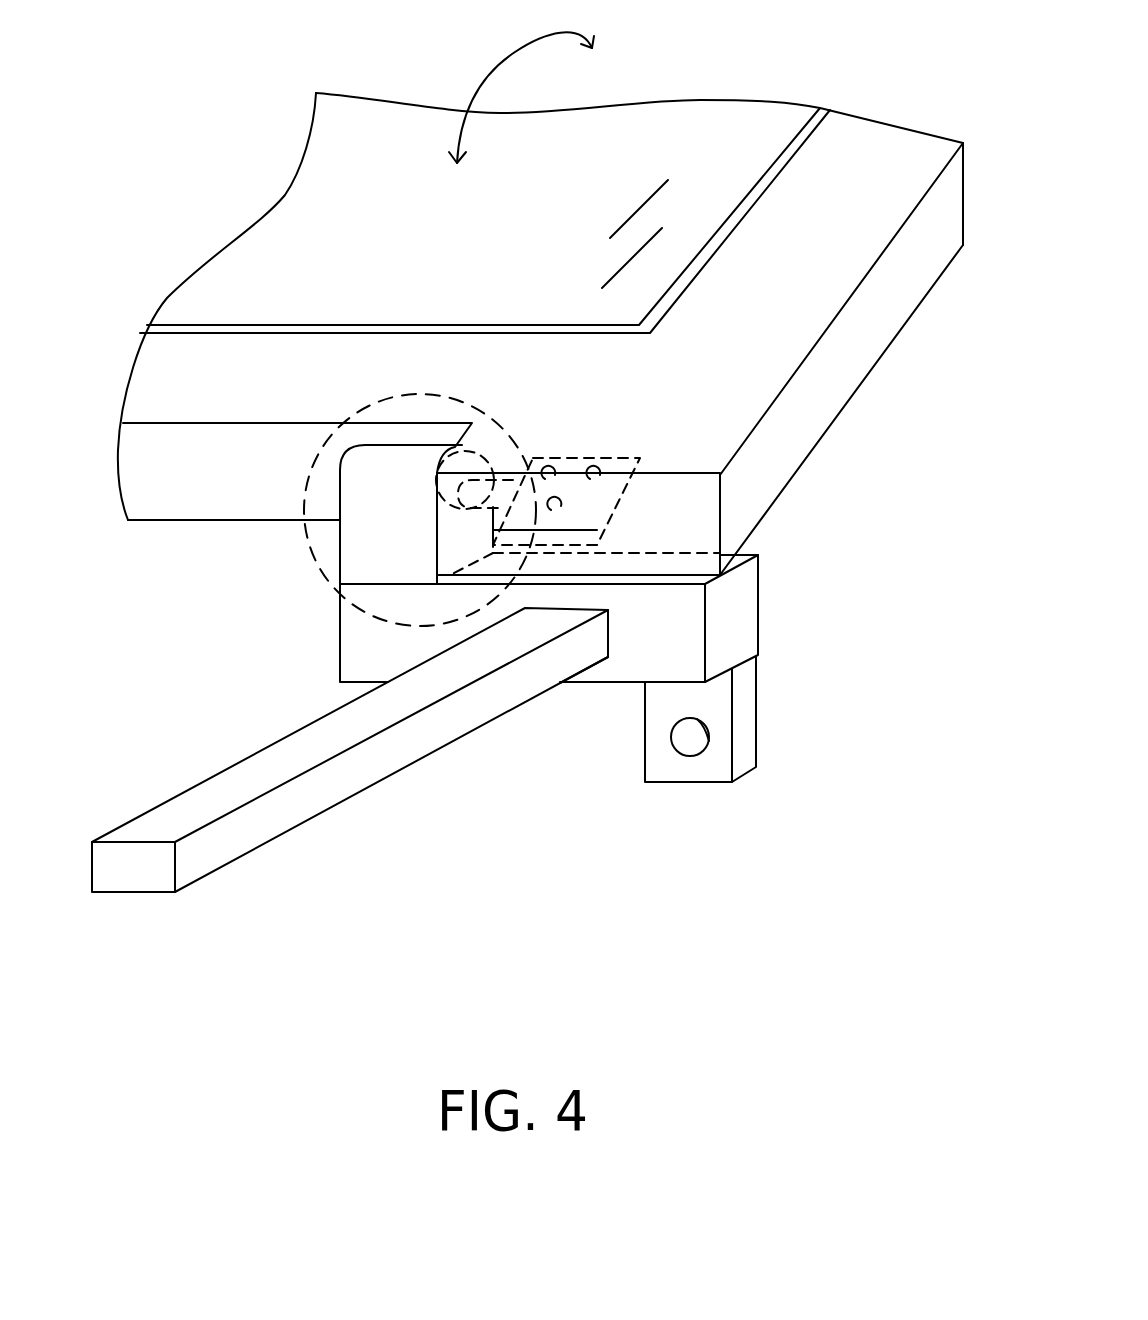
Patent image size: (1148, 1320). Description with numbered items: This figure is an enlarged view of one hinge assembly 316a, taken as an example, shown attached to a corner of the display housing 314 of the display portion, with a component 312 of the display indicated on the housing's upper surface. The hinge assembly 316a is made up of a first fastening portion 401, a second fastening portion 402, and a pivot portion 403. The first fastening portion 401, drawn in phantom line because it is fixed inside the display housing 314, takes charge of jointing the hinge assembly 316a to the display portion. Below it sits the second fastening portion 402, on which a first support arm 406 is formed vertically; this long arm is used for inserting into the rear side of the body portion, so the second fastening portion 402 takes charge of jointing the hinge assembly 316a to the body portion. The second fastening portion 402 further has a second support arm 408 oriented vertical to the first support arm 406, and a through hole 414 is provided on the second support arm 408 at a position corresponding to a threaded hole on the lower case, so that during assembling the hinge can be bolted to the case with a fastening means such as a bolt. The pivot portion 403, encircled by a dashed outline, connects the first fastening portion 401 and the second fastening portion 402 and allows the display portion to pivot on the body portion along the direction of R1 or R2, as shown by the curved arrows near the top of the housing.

The top cover 312 is at (688, 215).
The display housing 314 is at (743, 377).
The hinge assembly 316a is at (800, 957).
The first fastening portion 401 is at (593, 500).
The second fastening portion 402 is at (370, 634).
The pivot portion 403 is at (313, 550).
The first support arm 406 is at (328, 787).
The second support arm 408 is at (745, 725).
The through hole 414 is at (692, 738).
The direction R1 is at (546, 87).
The direction R2 is at (447, 178).